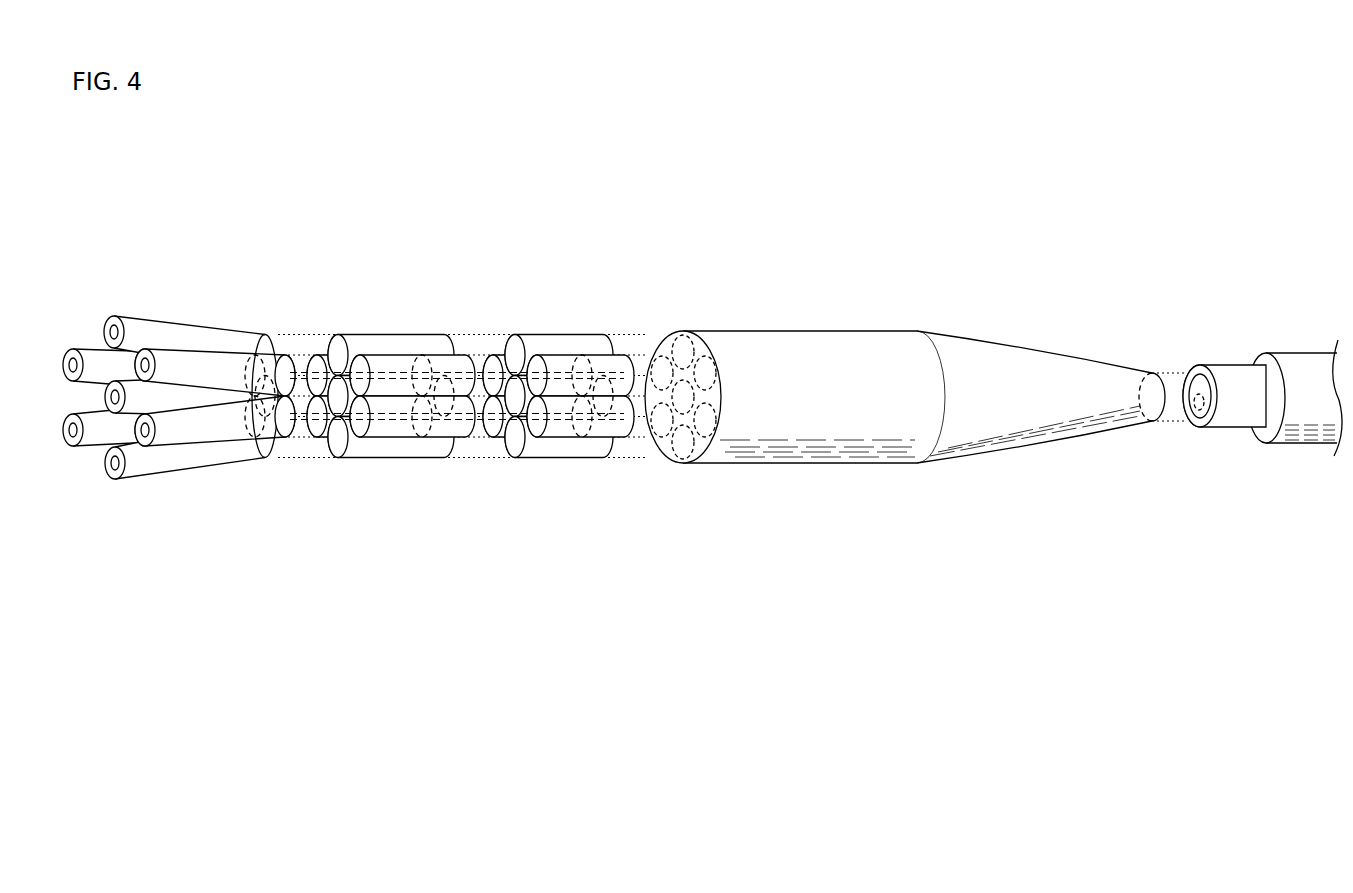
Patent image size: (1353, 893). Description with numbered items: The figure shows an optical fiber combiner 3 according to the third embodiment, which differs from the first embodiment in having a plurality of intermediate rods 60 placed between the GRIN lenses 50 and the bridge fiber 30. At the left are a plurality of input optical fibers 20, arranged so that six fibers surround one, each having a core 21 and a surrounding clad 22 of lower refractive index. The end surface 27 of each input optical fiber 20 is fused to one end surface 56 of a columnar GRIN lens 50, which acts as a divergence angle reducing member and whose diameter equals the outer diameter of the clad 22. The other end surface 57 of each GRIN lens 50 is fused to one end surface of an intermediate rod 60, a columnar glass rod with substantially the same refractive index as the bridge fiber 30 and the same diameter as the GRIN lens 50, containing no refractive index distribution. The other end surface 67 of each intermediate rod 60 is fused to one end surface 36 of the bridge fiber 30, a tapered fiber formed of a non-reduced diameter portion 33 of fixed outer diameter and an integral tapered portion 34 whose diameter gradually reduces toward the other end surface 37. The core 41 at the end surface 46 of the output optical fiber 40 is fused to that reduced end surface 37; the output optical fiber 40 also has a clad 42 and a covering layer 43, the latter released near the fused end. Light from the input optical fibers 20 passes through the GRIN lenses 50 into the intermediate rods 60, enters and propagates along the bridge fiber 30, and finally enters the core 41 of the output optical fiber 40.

The optical fiber combiner 3 is at (874, 173).
The input optical fiber 20 is at (176, 388).
The core 21 is at (113, 326).
The clad 22 is at (108, 330).
The end surface 27 is at (282, 452).
The bridge fiber 30 is at (910, 399).
The non-reduced diameter portion 33 is at (683, 463).
The tapered portion 34 is at (1150, 421).
The one end surface 36 is at (662, 458).
The other end surface 37 is at (1172, 402).
The output optical fiber 40 is at (1251, 385).
The core 41 is at (1199, 396).
The clad 42 is at (1216, 367).
The covering layer 43 is at (1258, 360).
The end surface 46 is at (1198, 412).
The GRIN lens 50 is at (316, 367).
The one end surface 56 is at (399, 400).
The other end surface 57 is at (572, 402).
The intermediate rod 60 is at (496, 368).
The other end surface 67 is at (620, 458).